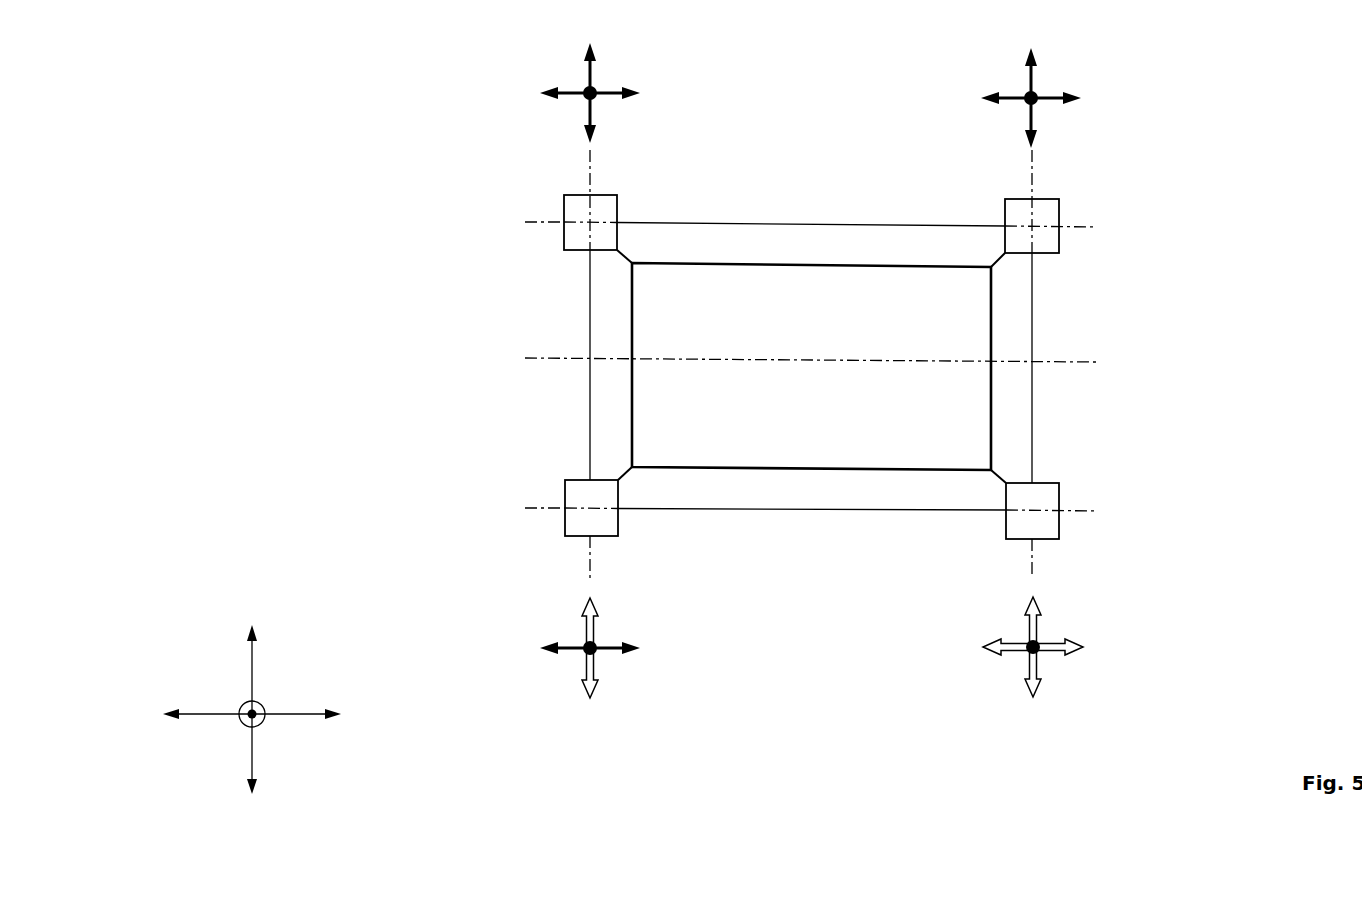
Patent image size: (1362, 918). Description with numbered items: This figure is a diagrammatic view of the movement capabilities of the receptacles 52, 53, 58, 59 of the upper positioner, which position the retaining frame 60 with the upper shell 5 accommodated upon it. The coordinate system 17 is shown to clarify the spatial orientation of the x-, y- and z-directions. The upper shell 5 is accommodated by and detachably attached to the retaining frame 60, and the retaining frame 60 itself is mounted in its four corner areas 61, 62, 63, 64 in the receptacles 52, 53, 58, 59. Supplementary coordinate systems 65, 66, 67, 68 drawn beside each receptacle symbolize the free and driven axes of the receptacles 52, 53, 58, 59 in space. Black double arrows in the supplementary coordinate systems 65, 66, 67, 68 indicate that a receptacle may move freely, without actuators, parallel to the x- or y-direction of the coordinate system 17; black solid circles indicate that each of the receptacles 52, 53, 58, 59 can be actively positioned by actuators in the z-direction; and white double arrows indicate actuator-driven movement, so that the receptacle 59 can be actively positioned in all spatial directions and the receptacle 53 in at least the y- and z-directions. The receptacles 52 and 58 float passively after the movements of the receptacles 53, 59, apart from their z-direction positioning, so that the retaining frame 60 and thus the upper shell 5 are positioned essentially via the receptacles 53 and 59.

The upper shell 5 is at (745, 264).
The coordinate system 17 is at (250, 706).
The receptacle 52 is at (577, 235).
The receptacle 53 is at (578, 492).
The receptacle 58 is at (1047, 238).
The receptacle 59 is at (1048, 495).
The retaining frame 60 is at (830, 224).
The corner area 61 is at (504, 178).
The corner area 62 is at (1118, 180).
The corner area 63 is at (1143, 595).
The corner area 64 is at (494, 562).
The supplementary coordinate system 65 is at (597, 90).
The supplementary coordinate system 66 is at (1022, 94).
The supplementary coordinate system 67 is at (596, 652).
The supplementary coordinate system 68 is at (1027, 650).